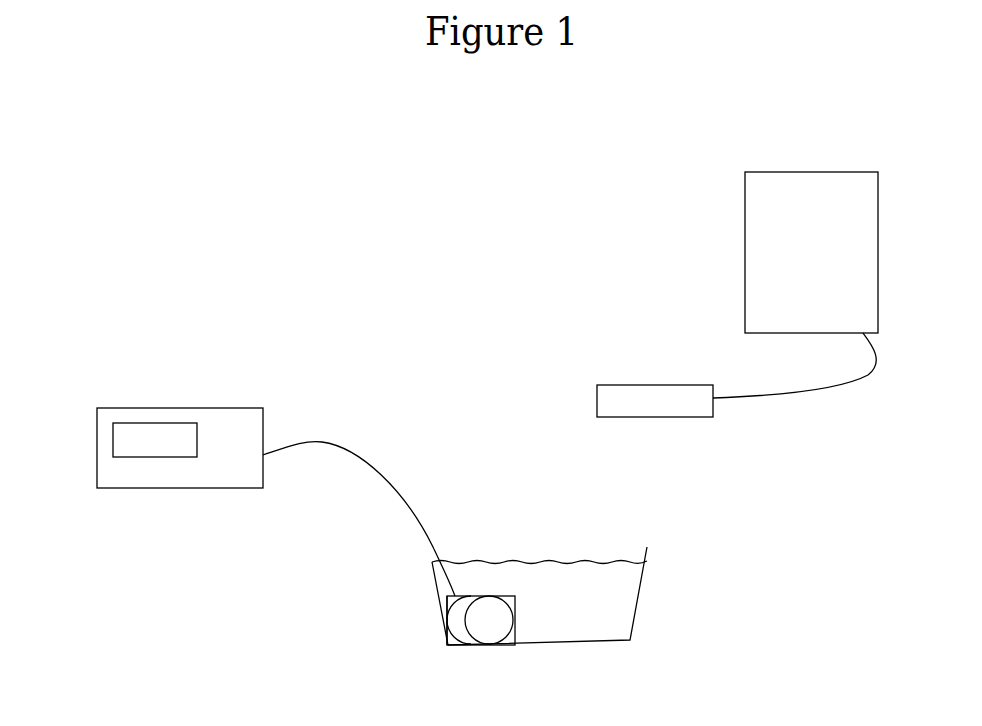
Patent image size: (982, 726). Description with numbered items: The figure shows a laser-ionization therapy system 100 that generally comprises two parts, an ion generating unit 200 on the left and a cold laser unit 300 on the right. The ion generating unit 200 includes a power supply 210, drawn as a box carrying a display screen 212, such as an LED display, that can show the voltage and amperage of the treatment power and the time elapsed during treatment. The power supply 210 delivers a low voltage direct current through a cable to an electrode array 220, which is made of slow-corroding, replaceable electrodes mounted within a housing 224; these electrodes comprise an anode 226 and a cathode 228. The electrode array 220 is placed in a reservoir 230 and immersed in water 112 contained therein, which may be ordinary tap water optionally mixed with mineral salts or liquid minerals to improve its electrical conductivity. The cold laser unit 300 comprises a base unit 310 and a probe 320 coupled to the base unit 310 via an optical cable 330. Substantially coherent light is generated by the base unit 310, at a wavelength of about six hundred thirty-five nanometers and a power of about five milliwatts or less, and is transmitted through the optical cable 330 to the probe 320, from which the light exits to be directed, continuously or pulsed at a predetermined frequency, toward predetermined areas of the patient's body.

The laser-ionization therapy system 100 is at (372, 230).
The water 112 is at (581, 578).
The ion generating unit 200 is at (201, 586).
The power supply 210 is at (145, 407).
The display screen 212 is at (113, 441).
The electrode array 220 is at (471, 640).
The housing 224 is at (518, 606).
The anode 226 is at (446, 633).
The cathode 228 is at (498, 632).
The reservoir 230 is at (645, 590).
The cold laser unit 300 is at (631, 240).
The base unit 310 is at (811, 252).
The probe 320 is at (630, 385).
The optical cable 330 is at (781, 396).